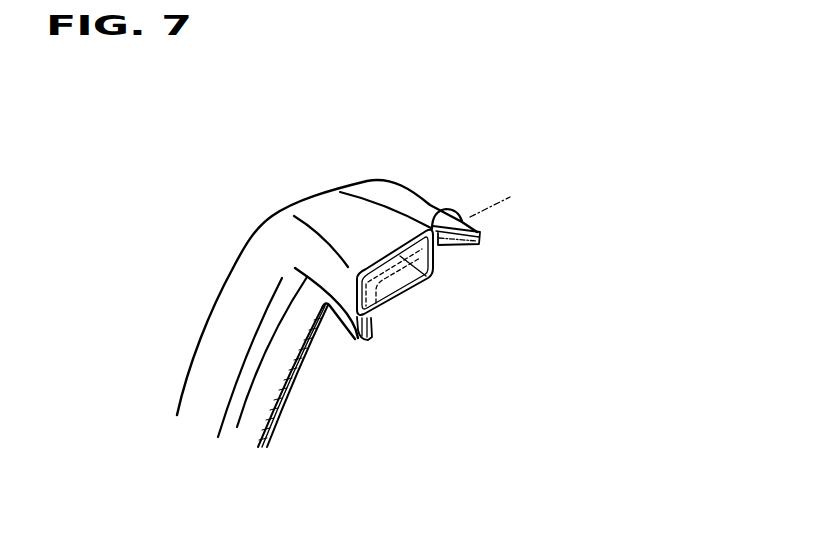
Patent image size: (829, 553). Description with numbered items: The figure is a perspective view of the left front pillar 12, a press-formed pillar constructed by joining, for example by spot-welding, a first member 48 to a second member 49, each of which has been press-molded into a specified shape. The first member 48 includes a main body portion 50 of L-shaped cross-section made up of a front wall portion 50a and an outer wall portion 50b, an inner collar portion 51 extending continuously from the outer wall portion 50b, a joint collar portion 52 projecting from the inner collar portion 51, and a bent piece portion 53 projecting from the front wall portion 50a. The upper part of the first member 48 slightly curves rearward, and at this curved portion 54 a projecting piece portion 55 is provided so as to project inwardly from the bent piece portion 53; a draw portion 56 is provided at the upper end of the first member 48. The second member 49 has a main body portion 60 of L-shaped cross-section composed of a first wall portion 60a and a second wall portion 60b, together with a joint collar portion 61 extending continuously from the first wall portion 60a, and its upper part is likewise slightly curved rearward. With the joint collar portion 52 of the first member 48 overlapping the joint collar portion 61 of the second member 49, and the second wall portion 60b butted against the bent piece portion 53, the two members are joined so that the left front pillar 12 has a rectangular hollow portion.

The left front pillar 12 is at (233, 187).
The first member 48 is at (430, 177).
The second member 49 is at (451, 292).
The main body portion 50 is at (235, 258).
The front wall portion 50a is at (338, 217).
The outer wall portion 50b is at (232, 322).
The inner collar portion 51 is at (258, 353).
The joint collar portion 52 is at (262, 402).
The bent piece portion 53 is at (445, 212).
The curved portion 54 is at (300, 208).
The projecting piece portion 55 is at (395, 188).
The draw portion 56 is at (496, 195).
The main body portion 60 is at (427, 293).
The first wall portion 60a is at (392, 308).
The second wall portion 60b is at (440, 248).
The joint collar portion 61 is at (375, 338).